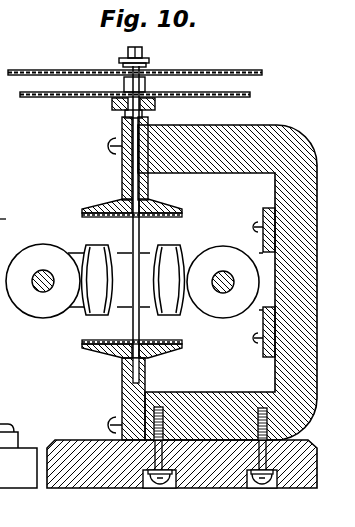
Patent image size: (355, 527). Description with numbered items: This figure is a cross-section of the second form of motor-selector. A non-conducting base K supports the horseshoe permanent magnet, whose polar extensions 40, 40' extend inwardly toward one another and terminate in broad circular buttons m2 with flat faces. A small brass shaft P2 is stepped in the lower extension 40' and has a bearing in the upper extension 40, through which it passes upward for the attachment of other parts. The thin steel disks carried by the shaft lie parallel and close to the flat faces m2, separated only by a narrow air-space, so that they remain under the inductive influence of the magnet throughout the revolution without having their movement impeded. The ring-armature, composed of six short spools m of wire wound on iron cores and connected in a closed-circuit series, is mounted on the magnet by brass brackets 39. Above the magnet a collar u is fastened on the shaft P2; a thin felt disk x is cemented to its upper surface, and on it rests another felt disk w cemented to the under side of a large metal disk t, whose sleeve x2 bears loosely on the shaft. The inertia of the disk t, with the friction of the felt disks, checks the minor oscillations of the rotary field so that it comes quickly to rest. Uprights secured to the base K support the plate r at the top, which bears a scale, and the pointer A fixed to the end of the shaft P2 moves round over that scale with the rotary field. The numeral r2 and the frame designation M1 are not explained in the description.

The pointer A is at (128, 61).
The plate r is at (135, 65).
The metal disk t is at (242, 96).
The sleeve x2 is at (146, 88).
The felt disk x is at (112, 104).
The felt disk w is at (158, 101).
The collar u is at (143, 116).
The brass shaft P2 is at (130, 332).
The polar extension 40 is at (111, 156).
The polar extension 40' is at (108, 406).
The circular button m2 is at (173, 360).
The spool m is at (134, 274).
The brass bracket 39 is at (254, 282).
The rail r2 is at (6, 211).
The frame M1 is at (232, 381).
The base K is at (182, 447).